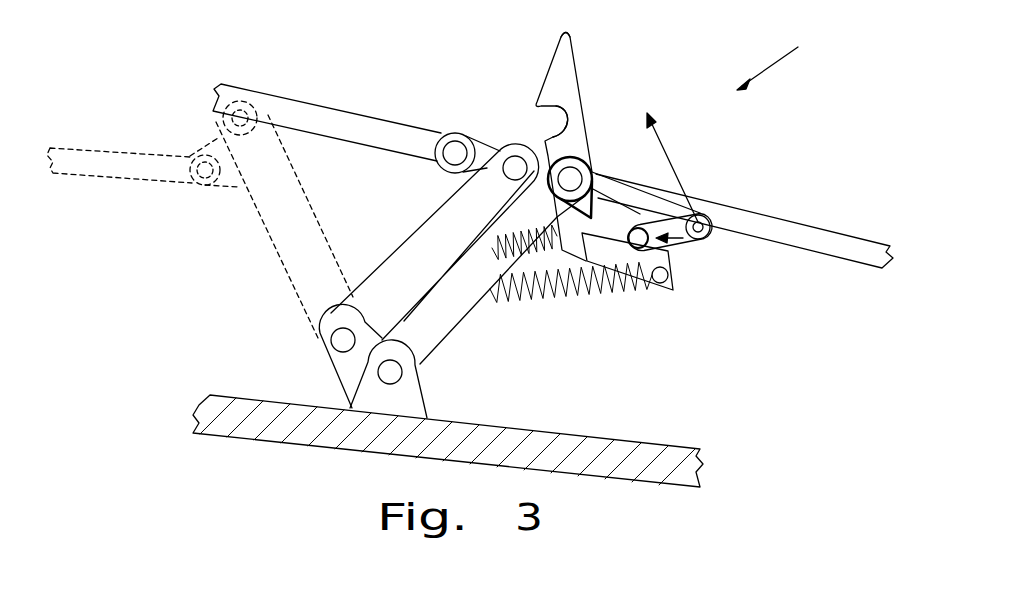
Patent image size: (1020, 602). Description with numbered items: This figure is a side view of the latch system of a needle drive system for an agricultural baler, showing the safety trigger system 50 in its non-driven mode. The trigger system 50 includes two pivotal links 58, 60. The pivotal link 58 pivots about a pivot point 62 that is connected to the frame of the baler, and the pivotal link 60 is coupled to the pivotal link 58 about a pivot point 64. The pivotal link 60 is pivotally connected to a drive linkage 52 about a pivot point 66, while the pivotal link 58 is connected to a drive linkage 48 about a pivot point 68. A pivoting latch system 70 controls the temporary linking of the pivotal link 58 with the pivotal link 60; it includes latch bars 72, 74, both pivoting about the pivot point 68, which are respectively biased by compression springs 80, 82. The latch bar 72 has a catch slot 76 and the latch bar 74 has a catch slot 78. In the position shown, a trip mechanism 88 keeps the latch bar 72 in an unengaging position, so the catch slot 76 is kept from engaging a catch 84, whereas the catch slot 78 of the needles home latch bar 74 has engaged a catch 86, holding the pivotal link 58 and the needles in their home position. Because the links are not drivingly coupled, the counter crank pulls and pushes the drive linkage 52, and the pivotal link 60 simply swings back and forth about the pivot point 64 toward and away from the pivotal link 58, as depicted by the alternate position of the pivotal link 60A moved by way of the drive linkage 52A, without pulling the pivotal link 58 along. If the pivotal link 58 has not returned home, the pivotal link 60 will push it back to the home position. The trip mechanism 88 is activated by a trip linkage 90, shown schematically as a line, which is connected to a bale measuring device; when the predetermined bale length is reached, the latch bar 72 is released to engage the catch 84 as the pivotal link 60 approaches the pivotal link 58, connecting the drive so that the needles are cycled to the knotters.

The drive linkage 48 is at (805, 230).
The trigger system 50 is at (783, 56).
The drive linkage 52 is at (331, 112).
The drive linkage in alternate position 52A is at (187, 155).
The pivotal link 58 is at (470, 325).
The pivotal link 60 is at (385, 257).
The pivotal link in alternate position 60A is at (266, 240).
The pivot point 62 is at (392, 372).
The pivot point 64 is at (343, 340).
The pivot point 66 is at (451, 143).
The pivot point 68 is at (570, 180).
The pivoting latch system 70 is at (598, 108).
The latch bar 72 is at (573, 48).
The latch bar 74 is at (677, 273).
The catch slot 76 is at (550, 122).
The catch slot 78 is at (704, 243).
The compression spring 80 is at (488, 246).
The compression spring 82 is at (575, 286).
The catch 84 is at (515, 168).
The catch 86 is at (648, 240).
The trip mechanism 88 is at (710, 220).
The trip linkage 90 is at (667, 147).